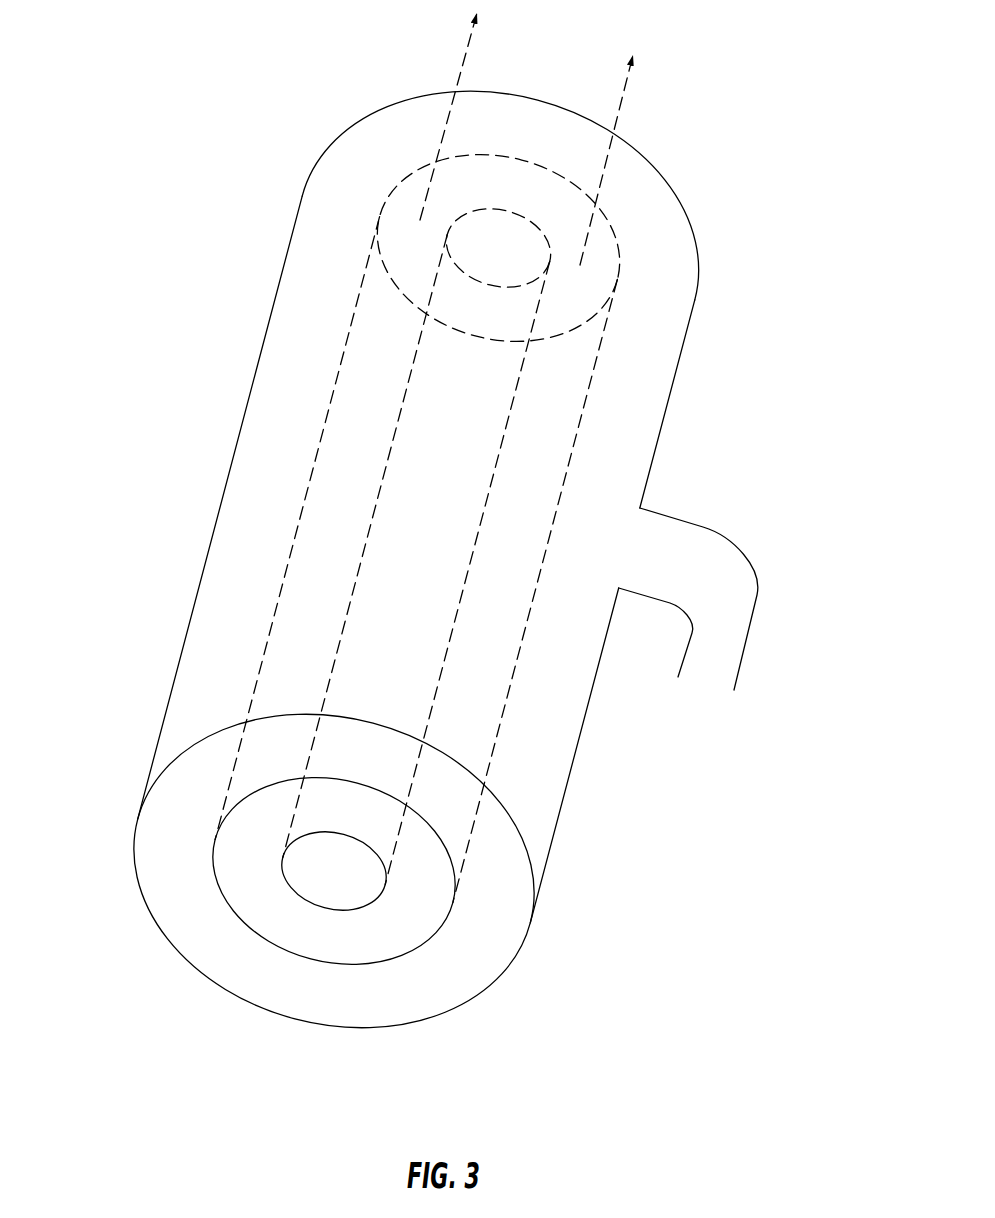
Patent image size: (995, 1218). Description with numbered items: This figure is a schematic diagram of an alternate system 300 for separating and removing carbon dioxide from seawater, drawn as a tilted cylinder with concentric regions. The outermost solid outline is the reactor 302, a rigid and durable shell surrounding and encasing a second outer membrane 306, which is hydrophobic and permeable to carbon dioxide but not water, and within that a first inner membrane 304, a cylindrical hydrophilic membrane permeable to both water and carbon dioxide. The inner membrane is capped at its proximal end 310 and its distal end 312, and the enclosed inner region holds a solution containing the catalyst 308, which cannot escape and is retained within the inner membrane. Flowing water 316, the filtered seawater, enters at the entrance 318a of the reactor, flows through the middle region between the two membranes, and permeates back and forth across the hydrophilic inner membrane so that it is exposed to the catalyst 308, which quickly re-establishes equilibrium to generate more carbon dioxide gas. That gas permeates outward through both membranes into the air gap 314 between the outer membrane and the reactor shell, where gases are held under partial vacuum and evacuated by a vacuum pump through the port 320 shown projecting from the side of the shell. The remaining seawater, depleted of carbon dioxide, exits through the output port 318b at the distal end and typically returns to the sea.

The system 300 is at (266, 62).
The reactor 302 is at (229, 481).
The first inner membrane 304 is at (286, 827).
The second outer membrane 306 is at (228, 785).
The catalyst 308 is at (445, 541).
The proximal end 310 is at (377, 862).
The distal end 312 is at (545, 238).
The air gap 314 is at (325, 354).
The flowing water 316 is at (385, 434).
The entrance 318a is at (477, 995).
The output port 318b is at (632, 52).
The port 320 is at (713, 660).